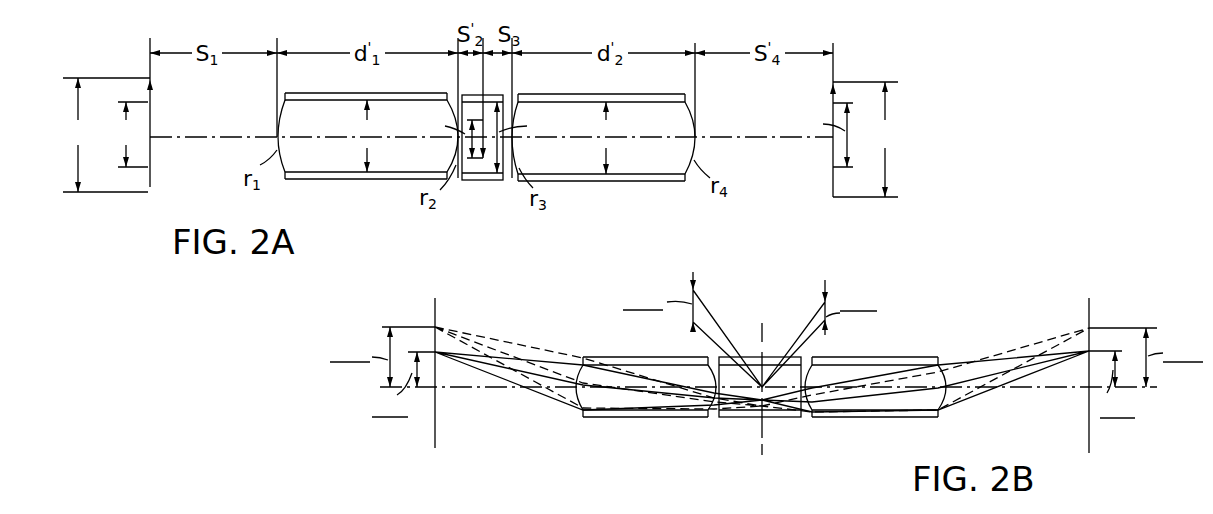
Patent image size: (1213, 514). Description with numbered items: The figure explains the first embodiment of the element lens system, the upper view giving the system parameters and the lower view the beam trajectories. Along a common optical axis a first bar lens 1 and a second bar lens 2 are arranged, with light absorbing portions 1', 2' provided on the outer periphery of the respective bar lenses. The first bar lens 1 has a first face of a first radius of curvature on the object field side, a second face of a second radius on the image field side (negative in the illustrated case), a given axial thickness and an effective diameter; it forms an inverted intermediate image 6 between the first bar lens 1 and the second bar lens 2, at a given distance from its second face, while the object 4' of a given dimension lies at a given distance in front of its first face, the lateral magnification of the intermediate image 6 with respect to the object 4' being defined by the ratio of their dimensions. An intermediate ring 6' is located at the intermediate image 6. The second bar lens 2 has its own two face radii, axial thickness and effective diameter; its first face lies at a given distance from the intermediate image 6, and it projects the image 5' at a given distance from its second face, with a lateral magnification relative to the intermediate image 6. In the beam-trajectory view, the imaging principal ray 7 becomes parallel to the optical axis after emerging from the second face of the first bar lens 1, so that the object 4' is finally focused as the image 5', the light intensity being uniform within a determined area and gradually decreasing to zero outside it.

In FIG. 2A, the first bar lens 1 is at (368, 154).
In FIG. 2B, the first bar lens 1 is at (646, 404).
In FIG. 2A, the light absorbing portion 1' is at (366, 154).
In FIG. 2A, the second bar lens 2 is at (603, 157).
In FIG. 2B, the second bar lens 2 is at (875, 403).
In FIG. 2A, the light absorbing portion 2' is at (601, 157).
In FIG. 2A, the object 4' is at (125, 115).
In FIG. 2B, the object 4' is at (395, 373).
In FIG. 2A, the image 5' is at (846, 120).
In FIG. 2B, the image 5' is at (1126, 375).
In FIG. 2A, the intermediate image 6 is at (489, 160).
In FIG. 2B, the intermediate image 6 is at (750, 369).
In FIG. 2A, the intermediate ring 6' is at (485, 163).
In FIG. 2B, the intermediate ring 6' is at (758, 411).
In FIG. 2B, the imaging principal ray 7 is at (493, 368).